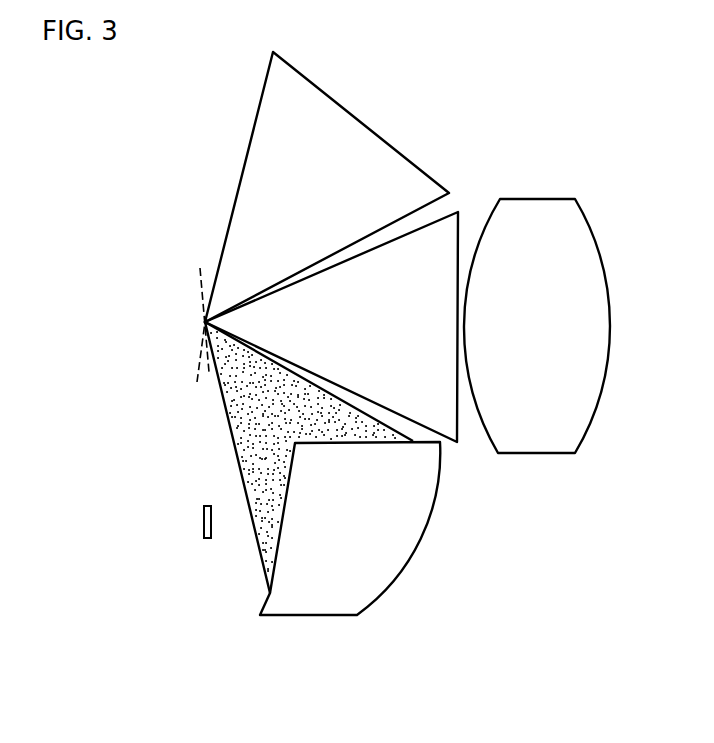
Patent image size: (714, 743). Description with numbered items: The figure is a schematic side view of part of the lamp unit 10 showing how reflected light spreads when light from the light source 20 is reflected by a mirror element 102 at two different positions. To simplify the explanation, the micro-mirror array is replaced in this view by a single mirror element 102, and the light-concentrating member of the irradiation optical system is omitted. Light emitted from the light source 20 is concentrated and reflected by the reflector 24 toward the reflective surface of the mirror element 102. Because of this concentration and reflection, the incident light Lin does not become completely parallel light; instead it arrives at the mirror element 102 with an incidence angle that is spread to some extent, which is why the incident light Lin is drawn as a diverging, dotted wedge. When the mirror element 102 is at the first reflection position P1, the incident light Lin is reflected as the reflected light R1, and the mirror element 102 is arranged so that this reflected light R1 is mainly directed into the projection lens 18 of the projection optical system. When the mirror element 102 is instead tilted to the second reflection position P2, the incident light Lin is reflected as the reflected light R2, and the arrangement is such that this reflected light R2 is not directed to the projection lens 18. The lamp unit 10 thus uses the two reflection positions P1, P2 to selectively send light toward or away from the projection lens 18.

The lamp unit 10 is at (368, 712).
The reflected light R2 is at (327, 118).
The reflected light R1 is at (445, 237).
The projection lens 18 is at (545, 198).
The incident light Lin is at (257, 462).
The reflector 24 is at (402, 572).
The second reflection position P2 is at (198, 264).
The first reflection position P1 is at (197, 385).
The mirror element 102 is at (201, 323).
The light source 20 is at (200, 523).